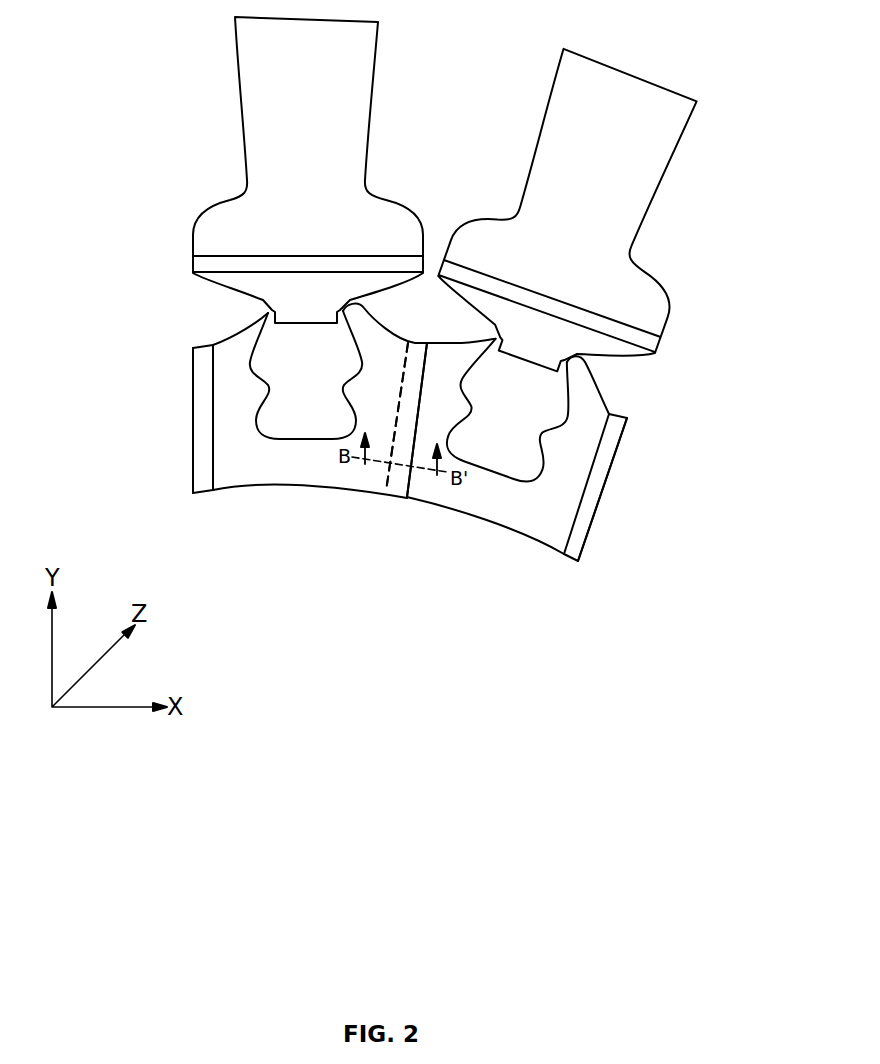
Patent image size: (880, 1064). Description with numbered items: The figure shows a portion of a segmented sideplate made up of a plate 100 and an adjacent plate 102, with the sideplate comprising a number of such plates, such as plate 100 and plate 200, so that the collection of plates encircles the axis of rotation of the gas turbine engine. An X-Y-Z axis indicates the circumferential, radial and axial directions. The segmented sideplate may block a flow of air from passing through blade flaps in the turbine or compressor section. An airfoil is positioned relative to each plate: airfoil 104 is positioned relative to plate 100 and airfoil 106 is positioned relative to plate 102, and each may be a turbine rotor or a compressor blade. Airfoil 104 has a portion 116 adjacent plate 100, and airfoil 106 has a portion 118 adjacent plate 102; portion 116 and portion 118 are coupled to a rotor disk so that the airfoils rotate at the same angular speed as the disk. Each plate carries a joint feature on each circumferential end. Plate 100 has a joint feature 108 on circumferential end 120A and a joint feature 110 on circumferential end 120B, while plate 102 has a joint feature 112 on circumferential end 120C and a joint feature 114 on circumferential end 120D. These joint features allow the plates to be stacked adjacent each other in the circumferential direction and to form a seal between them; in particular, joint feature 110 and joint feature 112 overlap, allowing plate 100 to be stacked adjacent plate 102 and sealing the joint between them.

The plate 100 is at (266, 505).
The plate 102 is at (495, 536).
The airfoil 104 is at (322, 96).
The airfoil 106 is at (621, 141).
The joint feature 108 is at (198, 447).
The joint feature 110 is at (389, 490).
The joint feature 112 is at (403, 497).
The joint feature 114 is at (586, 508).
The portion 116 is at (295, 370).
The portion 118 is at (527, 387).
The circumferential end 120A is at (197, 382).
The circumferential end 120B is at (410, 477).
The circumferential end 120C is at (392, 438).
The circumferential end 120D is at (609, 476).
The plate 200 is at (534, 547).